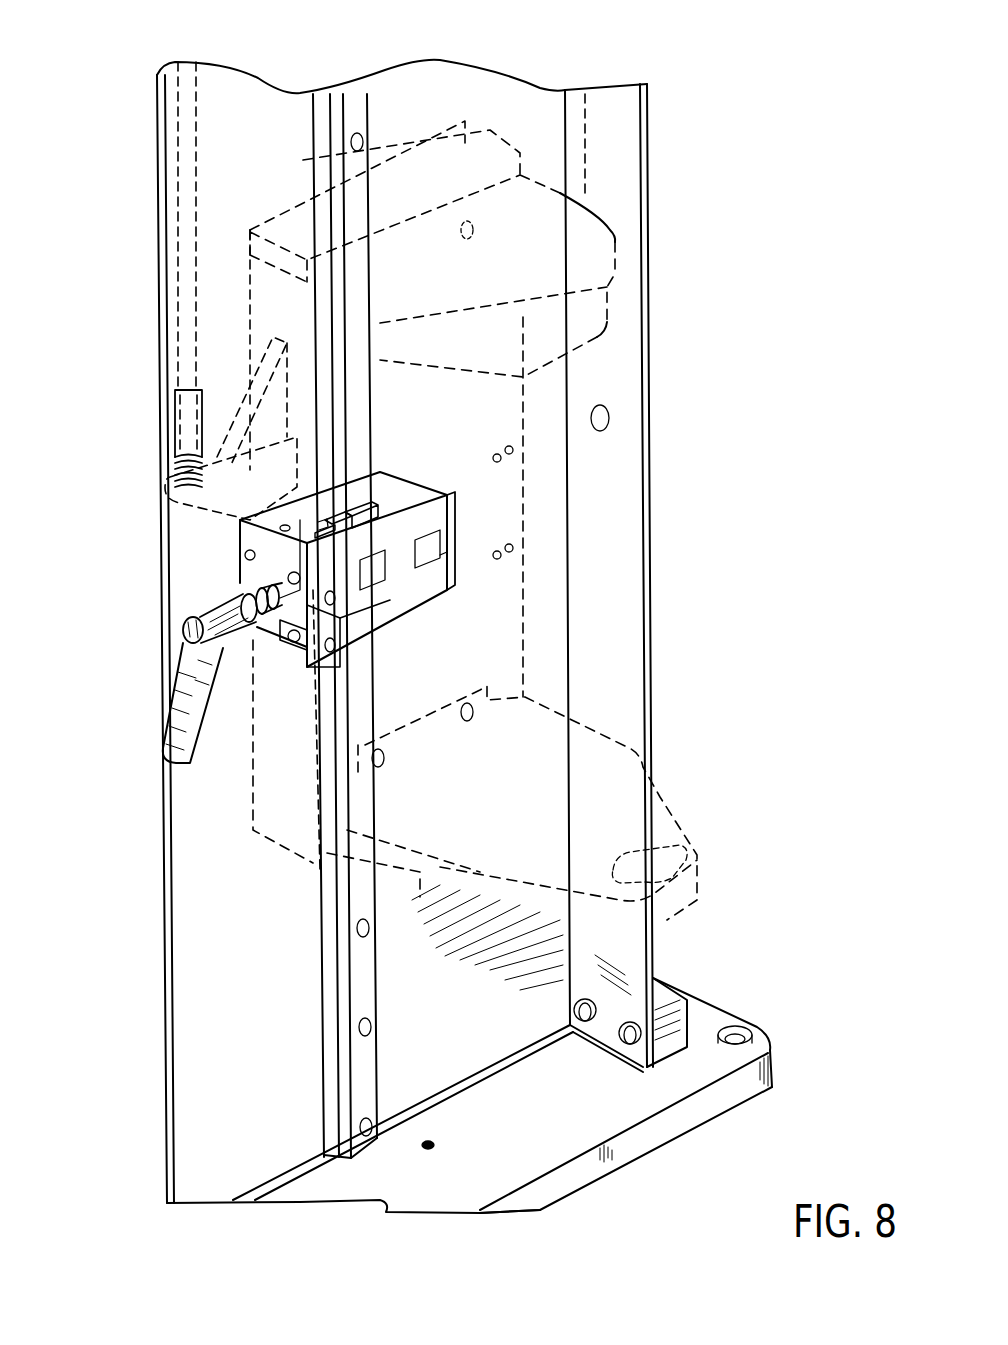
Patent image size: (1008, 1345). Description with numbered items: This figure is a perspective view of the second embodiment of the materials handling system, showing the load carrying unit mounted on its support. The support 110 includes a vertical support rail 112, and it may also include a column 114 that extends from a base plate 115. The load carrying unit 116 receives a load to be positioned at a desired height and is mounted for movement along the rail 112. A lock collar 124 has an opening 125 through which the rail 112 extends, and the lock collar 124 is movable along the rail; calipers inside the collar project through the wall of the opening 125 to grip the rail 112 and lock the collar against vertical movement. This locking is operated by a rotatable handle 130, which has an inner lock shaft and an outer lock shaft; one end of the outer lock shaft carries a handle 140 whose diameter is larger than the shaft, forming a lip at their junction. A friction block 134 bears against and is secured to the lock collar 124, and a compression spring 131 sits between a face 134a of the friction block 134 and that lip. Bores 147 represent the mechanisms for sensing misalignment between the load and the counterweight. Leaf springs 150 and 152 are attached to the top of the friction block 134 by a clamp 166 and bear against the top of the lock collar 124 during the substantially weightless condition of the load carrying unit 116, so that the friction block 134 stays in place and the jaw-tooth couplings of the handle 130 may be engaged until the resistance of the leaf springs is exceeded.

The support 110 is at (140, 303).
The vertical support rail 112 is at (322, 93).
The column 114 is at (618, 155).
The base plate 115 is at (550, 1103).
The load carrying unit 116 is at (667, 800).
The lock collar 124 is at (388, 502).
The opening 125 is at (404, 478).
The rotatable handle 130 is at (190, 603).
The compression spring 131 is at (240, 583).
The friction block 134 is at (358, 624).
The face of friction block 134a is at (276, 622).
The handle 140 is at (185, 720).
The bores 147 is at (245, 554).
The leaf spring 150 is at (375, 468).
The leaf spring 152 is at (450, 507).
The clamp 166 is at (240, 521).